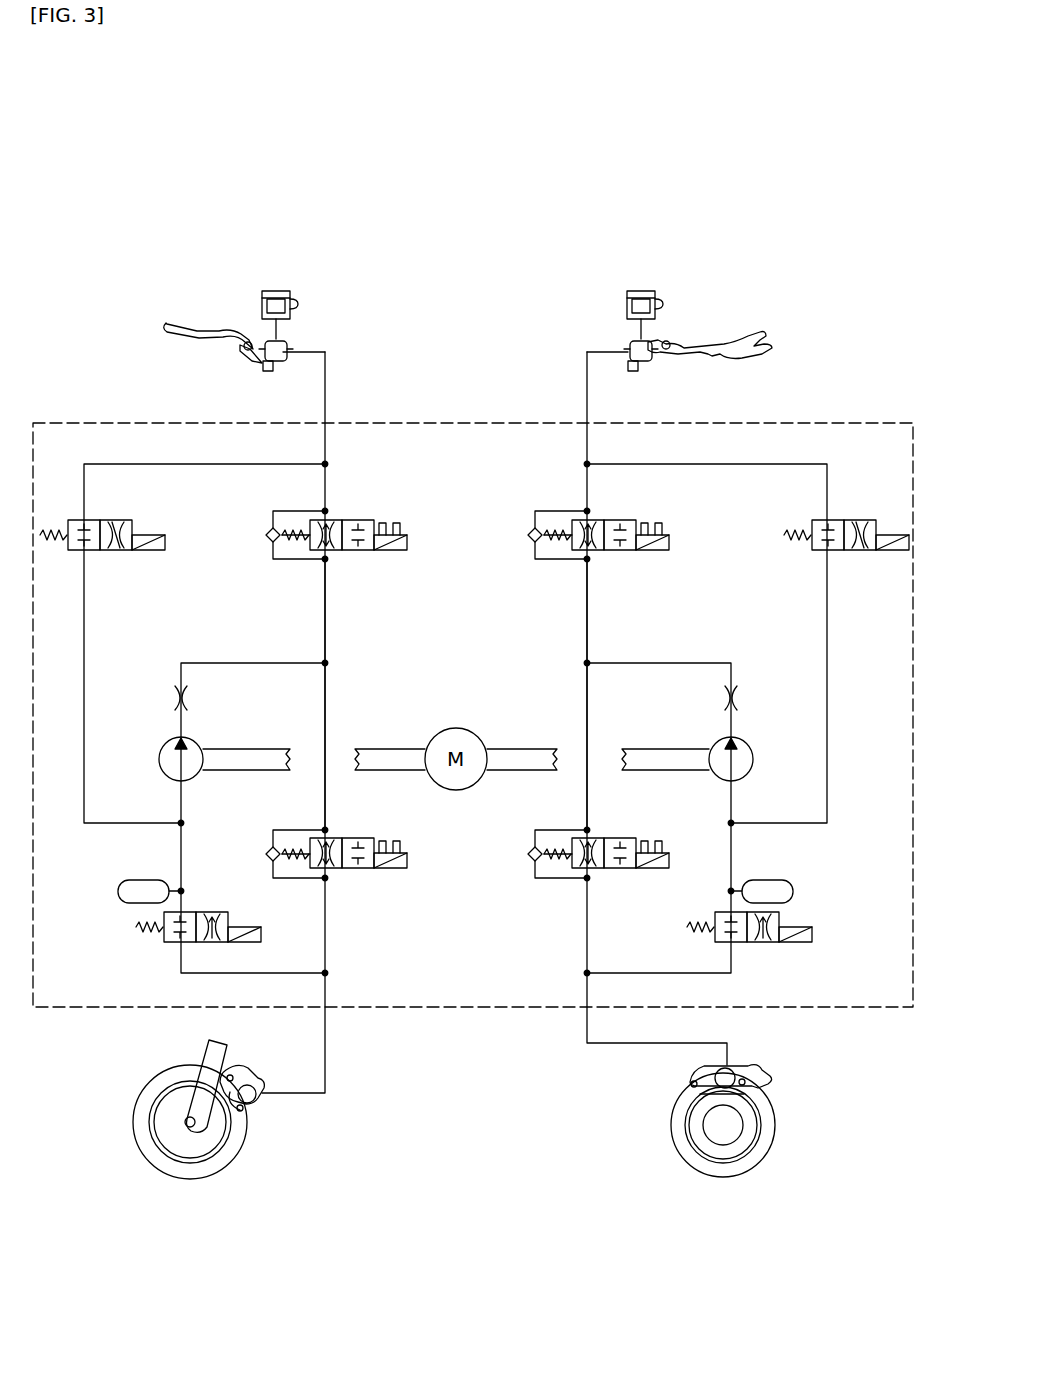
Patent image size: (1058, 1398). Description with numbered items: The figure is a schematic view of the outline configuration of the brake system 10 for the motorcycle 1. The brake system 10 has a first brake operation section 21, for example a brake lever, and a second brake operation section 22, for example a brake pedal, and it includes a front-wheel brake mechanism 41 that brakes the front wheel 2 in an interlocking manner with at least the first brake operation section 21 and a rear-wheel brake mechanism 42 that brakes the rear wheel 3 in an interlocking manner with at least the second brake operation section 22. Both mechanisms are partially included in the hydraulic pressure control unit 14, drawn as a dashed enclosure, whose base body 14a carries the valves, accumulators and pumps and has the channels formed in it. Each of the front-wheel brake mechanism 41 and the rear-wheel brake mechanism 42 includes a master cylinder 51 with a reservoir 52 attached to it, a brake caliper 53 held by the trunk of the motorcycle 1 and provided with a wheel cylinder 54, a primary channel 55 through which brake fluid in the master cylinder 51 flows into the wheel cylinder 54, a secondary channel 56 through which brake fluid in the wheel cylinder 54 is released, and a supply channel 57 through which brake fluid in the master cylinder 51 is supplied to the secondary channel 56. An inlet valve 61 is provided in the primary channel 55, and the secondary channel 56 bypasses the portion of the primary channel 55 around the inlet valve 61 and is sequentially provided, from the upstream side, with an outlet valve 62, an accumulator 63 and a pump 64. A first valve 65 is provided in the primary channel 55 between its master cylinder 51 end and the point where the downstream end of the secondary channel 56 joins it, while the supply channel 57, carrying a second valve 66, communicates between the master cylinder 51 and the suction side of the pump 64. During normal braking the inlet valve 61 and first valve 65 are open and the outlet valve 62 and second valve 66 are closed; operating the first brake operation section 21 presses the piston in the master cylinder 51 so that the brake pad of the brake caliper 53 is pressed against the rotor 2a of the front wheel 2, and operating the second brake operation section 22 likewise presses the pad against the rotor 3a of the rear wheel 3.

The motorcycle 1 is at (115, 116).
The brake system 10 is at (174, 181).
The hydraulic pressure control unit 14 is at (804, 300).
The base body 14a is at (799, 422).
The front-wheel brake mechanism 41 is at (359, 238).
The rear-wheel brake mechanism 42 is at (553, 238).
The first brake operation section 21 is at (191, 320).
The second brake operation section 22 is at (740, 322).
The master cylinder 51 is at (269, 374).
The reservoir 52 is at (272, 290).
The brake caliper 53 is at (251, 1074).
The wheel cylinder 54 is at (256, 1100).
The primary channel 55 is at (324, 600).
The secondary channel 56 is at (250, 662).
The supply channel 57 is at (228, 472).
The inlet valve 61 is at (364, 878).
The outlet valve 62 is at (214, 911).
The accumulator 63 is at (140, 878).
The pump 64 is at (158, 760).
The first valve 65 is at (387, 559).
The second valve 66 is at (132, 559).
The front wheel 2 is at (199, 1188).
The rotor 2a is at (232, 1148).
The rear wheel 3 is at (732, 1188).
The rotor 3a is at (682, 1148).